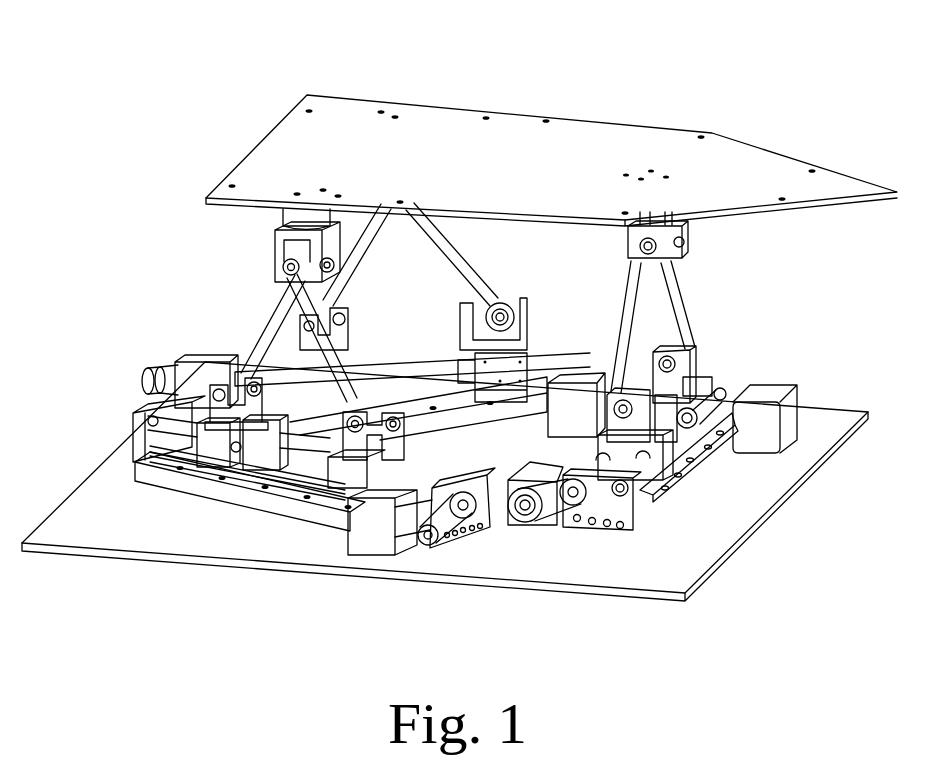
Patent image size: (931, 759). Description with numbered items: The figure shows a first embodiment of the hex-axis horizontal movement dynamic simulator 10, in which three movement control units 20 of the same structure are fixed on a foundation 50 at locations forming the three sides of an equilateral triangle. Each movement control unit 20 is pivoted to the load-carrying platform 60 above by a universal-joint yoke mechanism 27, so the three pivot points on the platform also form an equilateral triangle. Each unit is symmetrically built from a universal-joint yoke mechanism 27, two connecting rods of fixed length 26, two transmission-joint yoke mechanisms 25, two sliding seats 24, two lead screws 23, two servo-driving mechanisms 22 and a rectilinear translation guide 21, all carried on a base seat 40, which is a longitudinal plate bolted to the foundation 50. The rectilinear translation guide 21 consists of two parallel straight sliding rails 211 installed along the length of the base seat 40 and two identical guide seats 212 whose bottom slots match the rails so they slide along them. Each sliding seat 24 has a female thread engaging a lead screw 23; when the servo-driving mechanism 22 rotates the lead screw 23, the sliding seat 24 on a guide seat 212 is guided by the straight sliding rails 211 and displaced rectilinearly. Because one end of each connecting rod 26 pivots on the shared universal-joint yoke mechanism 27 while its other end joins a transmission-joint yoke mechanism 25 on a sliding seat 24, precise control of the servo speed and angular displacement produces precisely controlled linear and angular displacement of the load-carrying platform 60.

The hex-axis horizontal movement dynamic simulator 10 is at (290, 54).
The movement control unit 20 is at (508, 452).
The rectilinear translation guide 21 is at (655, 495).
The straight sliding rail 211 is at (153, 460).
The guide seat 212 is at (213, 468).
The servo-driving mechanism 22 is at (152, 365).
The lead screw 23 is at (297, 483).
The sliding seat 24 is at (337, 490).
The transmission-joint yoke mechanism 25 is at (350, 310).
The connecting rod of fixed length 26 is at (358, 248).
The universal-joint yoke mechanism 27 is at (262, 243).
The base seat 40 is at (157, 477).
The foundation 50 is at (673, 563).
The load-carrying platform 60 is at (540, 124).